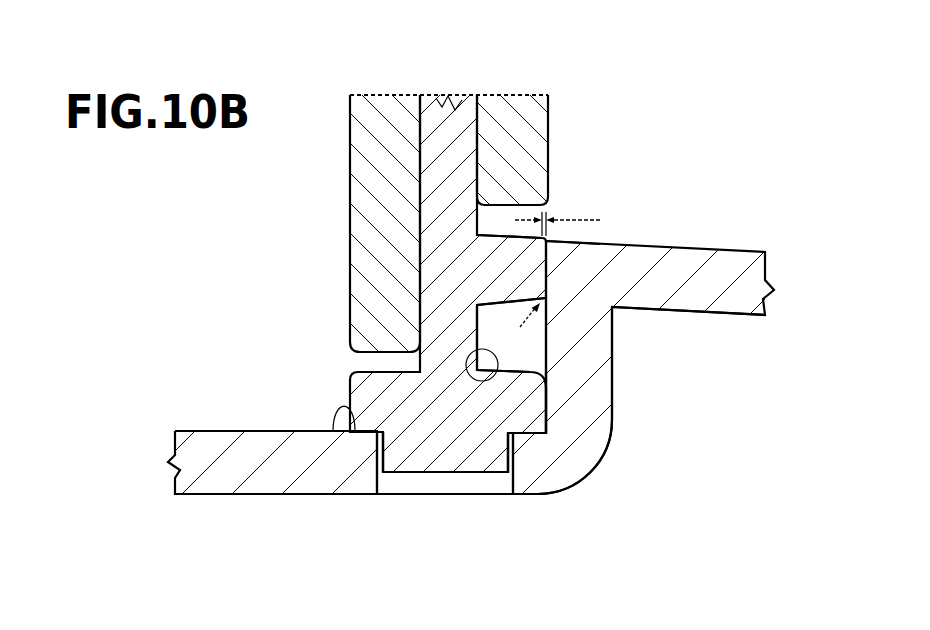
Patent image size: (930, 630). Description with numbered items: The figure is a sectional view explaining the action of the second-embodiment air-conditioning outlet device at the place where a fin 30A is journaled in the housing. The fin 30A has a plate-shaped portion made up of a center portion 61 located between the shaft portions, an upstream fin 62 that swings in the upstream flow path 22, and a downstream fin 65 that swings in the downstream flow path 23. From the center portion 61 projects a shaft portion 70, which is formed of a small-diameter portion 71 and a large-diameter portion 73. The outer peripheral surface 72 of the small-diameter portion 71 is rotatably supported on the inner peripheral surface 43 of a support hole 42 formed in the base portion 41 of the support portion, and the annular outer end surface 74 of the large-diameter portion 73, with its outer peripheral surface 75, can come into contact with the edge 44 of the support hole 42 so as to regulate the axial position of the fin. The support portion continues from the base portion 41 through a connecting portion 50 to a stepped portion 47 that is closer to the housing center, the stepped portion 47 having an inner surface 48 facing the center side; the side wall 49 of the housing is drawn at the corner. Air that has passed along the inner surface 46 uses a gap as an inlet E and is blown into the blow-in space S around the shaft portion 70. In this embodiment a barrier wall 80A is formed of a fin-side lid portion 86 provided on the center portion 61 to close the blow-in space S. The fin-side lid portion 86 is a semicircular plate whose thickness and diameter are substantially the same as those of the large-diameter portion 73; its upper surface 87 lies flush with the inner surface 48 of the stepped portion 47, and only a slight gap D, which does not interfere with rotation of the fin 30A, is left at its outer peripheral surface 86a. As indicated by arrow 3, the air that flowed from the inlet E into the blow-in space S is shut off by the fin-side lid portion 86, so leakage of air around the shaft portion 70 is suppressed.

The upstream flow path 22 is at (236, 236).
The downstream flow path 23 is at (633, 167).
The fin 30A is at (462, 108).
The upstream fin 62 is at (386, 115).
The center portion 61 is at (439, 112).
The downstream fin 65 is at (513, 112).
The upper surface 87 is at (512, 236).
The barrier wall 80A is at (643, 366).
The inner surface 48 is at (738, 250).
The fin-side lid portion 86 is at (549, 276).
The outer peripheral surface 86a is at (548, 258).
The stepped portion 47 is at (741, 313).
The connecting portion 50 is at (598, 355).
The side wall 49 is at (612, 472).
The outer peripheral surface 75 is at (552, 403).
The annular outer end surface 74 is at (527, 435).
The slight gap D is at (557, 215).
The blow-in space S is at (486, 341).
The arrow 3 is at (524, 357).
The inlet E is at (470, 355).
The base portion 41 is at (270, 472).
The inner surface 46 is at (267, 430).
The edge 44 is at (333, 432).
The support hole 42 is at (388, 496).
The inner peripheral surface 43 is at (410, 482).
The shaft portion 70 is at (437, 538).
The small-diameter portion 71 is at (457, 447).
The outer peripheral surface 72 is at (524, 448).
The large-diameter portion 73 is at (462, 400).